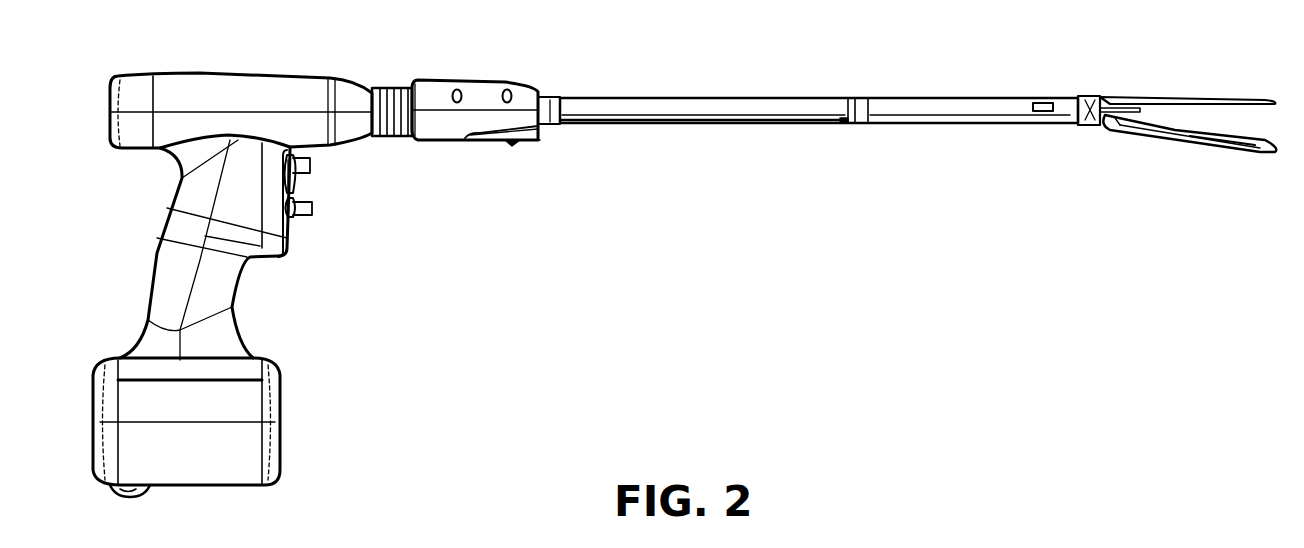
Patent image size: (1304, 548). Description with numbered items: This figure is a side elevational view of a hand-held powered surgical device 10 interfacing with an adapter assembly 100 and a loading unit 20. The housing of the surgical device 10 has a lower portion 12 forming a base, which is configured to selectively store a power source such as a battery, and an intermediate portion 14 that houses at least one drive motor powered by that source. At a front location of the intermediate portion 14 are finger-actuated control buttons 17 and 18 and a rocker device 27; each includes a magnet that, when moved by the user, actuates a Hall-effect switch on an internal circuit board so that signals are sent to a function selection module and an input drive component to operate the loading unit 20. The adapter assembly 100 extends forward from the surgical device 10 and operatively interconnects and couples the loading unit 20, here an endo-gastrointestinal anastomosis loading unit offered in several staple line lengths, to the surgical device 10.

The surgical device 10 is at (232, 70).
The lower portion 12 is at (257, 472).
The intermediate portion 14 is at (152, 262).
The control button 17 is at (310, 166).
The control button 18 is at (312, 212).
The rocker device 27 is at (298, 185).
The adapter assembly 100 is at (648, 98).
The loading unit 20 is at (1030, 98).